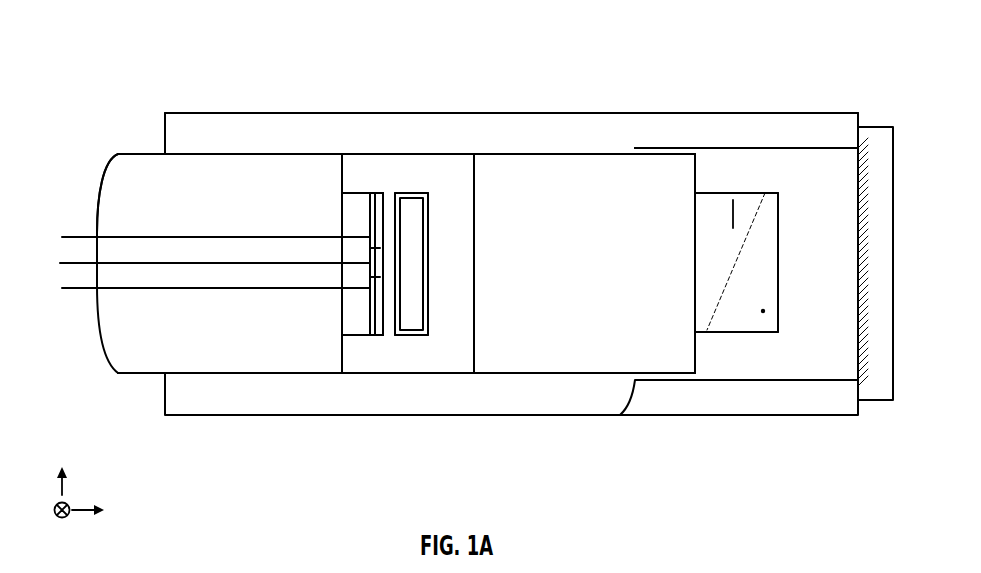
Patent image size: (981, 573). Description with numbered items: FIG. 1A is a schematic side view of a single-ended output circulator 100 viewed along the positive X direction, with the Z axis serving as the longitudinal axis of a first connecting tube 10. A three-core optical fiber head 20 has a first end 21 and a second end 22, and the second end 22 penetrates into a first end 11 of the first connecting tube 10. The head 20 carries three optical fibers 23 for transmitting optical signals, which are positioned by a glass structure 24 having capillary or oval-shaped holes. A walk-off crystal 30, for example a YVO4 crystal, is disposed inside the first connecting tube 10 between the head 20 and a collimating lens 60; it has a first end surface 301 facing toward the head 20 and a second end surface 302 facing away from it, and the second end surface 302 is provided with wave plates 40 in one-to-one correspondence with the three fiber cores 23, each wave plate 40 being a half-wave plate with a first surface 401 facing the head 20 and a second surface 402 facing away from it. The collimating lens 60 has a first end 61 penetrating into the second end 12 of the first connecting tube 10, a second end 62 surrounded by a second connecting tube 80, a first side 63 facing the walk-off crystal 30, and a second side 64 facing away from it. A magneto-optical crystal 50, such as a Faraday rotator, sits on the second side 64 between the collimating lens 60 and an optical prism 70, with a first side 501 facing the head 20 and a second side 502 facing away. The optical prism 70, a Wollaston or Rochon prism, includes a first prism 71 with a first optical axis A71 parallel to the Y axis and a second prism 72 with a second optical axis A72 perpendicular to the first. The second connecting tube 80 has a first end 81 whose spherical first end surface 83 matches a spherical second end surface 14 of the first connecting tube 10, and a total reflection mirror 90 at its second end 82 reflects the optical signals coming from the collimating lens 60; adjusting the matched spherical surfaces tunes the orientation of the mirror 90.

The single-ended output circulator 100 is at (72, 54).
The first connecting tube 10 is at (332, 123).
The first end of the first connecting tube 11 is at (180, 123).
The second end of the first connecting tube 12 is at (588, 127).
The spherical second end surface 14 is at (636, 148).
The three-core optical fiber head 20 is at (225, 350).
The first end of the three-core optical fiber head 21 is at (131, 346).
The second end of the three-core optical fiber head 22 is at (310, 350).
The optical fibers 23 is at (88, 235).
The glass structure 24 is at (120, 187).
The walk-off crystal 30 is at (350, 338).
The first end surface of the walk-off crystal 301 is at (372, 305).
The second end surface of the walk-off crystal 302 is at (370, 316).
The wave plates 40 is at (372, 338).
The first surface of the wave plate 401 is at (375, 208).
The second surface of the wave plate 402 is at (378, 216).
The magneto-optical crystal 50 is at (430, 340).
The first side of the magneto-optical crystal 501 is at (394, 222).
The second side of the magneto-optical crystal 502 is at (426, 217).
The collimating lens 60 is at (522, 342).
The first end of the collimating lens 61 is at (500, 352).
The second end of the collimating lens 62 is at (673, 345).
The first side of the collimating lens 63 is at (468, 170).
The second side of the collimating lens 64 is at (702, 170).
The optical prism 70 is at (747, 322).
The first prism 71 is at (718, 249).
The first optical axis A71 is at (746, 210).
The second prism 72 is at (773, 273).
The second optical axis A72 is at (776, 324).
The second connecting tube 80 is at (773, 133).
The first end of the second connecting tube 81 is at (668, 128).
The second end of the second connecting tube 82 is at (847, 130).
The spherical first end surface 83 is at (640, 122).
The total reflection mirror 90 is at (895, 190).